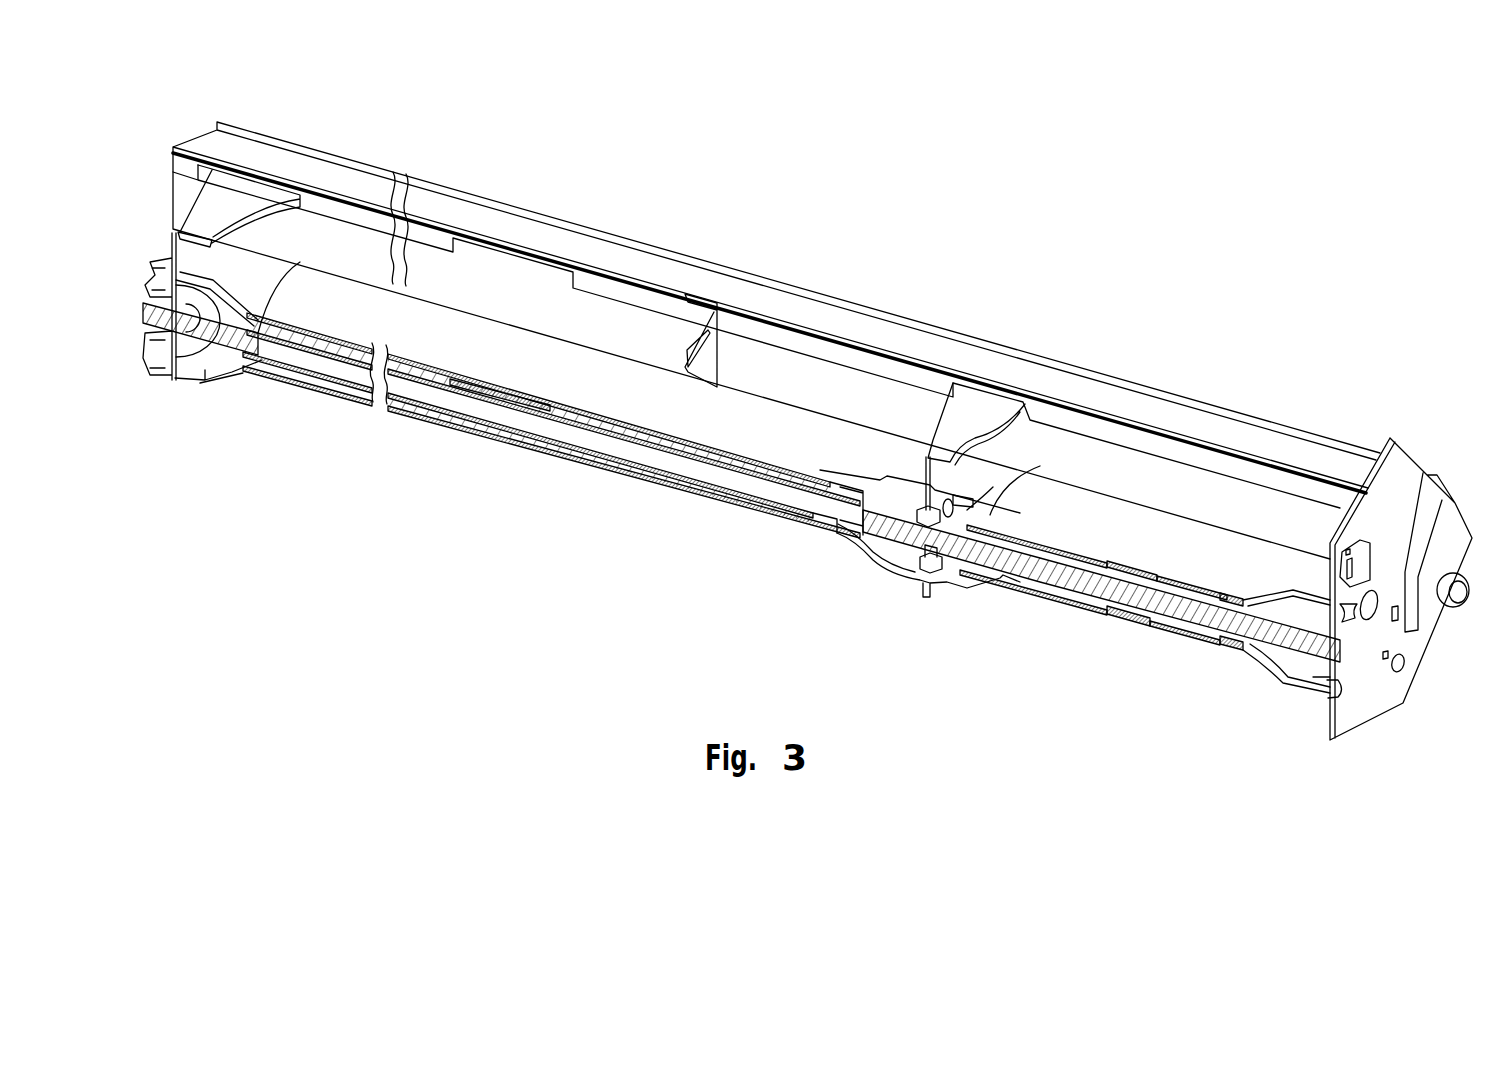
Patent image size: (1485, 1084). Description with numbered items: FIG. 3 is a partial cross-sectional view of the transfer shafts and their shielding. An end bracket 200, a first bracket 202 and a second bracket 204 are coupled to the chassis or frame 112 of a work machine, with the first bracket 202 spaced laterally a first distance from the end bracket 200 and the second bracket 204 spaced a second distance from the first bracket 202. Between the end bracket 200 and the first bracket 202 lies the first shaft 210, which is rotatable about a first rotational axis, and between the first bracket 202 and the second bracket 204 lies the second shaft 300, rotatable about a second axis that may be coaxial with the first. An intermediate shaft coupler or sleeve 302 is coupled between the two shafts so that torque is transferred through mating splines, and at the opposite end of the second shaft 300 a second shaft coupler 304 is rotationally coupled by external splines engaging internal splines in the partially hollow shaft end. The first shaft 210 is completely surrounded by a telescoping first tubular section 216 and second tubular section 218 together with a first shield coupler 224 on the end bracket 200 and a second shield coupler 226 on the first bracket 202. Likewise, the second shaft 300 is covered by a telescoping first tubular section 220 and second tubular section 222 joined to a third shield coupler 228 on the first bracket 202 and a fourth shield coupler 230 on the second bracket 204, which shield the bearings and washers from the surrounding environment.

The frame 112 is at (740, 290).
The end bracket 200 is at (1380, 690).
The first bracket 202 is at (982, 407).
The second bracket 204 is at (238, 198).
The first shaft 210 is at (1137, 597).
The first tubular section 216 is at (1190, 640).
The second tubular section 218 is at (1063, 600).
The first tubular section 220 is at (633, 477).
The second tubular section 222 is at (347, 390).
The first shield coupler 224 is at (1287, 673).
The second shield coupler 226 is at (972, 585).
The third shield coupler 228 is at (878, 555).
The fourth shield coupler 230 is at (218, 370).
The second shaft 300 is at (493, 412).
The intermediate shaft coupler 302 is at (885, 503).
The second shaft coupler 304 is at (143, 300).